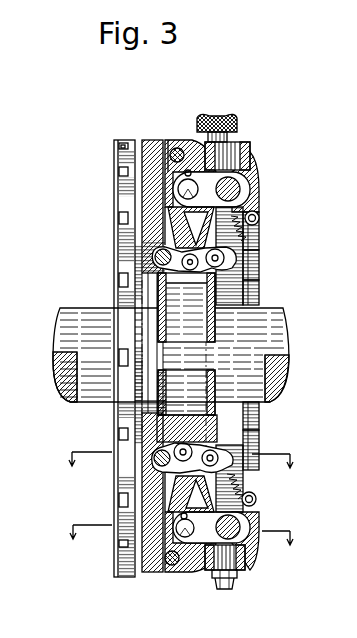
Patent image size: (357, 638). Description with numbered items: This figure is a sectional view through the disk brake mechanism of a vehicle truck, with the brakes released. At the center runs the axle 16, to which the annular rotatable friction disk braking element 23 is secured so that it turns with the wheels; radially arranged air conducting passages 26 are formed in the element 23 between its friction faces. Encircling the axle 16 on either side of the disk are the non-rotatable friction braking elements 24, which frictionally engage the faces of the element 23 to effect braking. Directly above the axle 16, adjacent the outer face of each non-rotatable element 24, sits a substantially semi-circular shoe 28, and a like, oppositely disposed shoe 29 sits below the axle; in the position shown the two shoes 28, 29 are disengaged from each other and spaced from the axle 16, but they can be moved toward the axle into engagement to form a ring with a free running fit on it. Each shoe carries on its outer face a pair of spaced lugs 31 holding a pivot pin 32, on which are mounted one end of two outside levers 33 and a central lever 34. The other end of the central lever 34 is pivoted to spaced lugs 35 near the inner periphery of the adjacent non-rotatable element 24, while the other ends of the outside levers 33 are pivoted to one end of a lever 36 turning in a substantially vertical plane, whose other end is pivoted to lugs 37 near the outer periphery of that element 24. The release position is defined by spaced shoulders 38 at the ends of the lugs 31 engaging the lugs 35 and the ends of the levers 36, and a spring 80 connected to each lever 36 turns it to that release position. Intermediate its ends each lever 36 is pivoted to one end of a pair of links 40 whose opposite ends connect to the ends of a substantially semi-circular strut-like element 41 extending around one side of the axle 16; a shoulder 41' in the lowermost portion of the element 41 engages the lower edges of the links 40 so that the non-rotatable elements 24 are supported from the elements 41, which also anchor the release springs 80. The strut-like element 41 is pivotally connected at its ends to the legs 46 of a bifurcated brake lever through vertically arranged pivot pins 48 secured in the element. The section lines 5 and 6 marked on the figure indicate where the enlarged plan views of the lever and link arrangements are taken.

The axle 16 is at (62, 378).
The rotatable friction disk braking element 23 is at (118, 140).
The non-rotatable friction braking element 24 is at (152, 140).
The air conducting passage 26 is at (120, 147).
The shoe 28 is at (187, 322).
The shoe 29 is at (257, 424).
The lug 31 is at (260, 240).
The pivot pin 32 is at (256, 292).
The outside lever 33 is at (250, 268).
The central lever 34 is at (181, 262).
The lug 35 is at (156, 249).
The lever 36 is at (259, 220).
The lug 37 is at (168, 143).
The shoulder 38 is at (150, 265).
The link 40 is at (252, 177).
The strut-like element 41 is at (265, 182).
The shoulder 41' is at (261, 547).
The leg 46 is at (250, 156).
The pivot pin 48 is at (236, 138).
The spring 80 is at (249, 229).
The section line 5— 5 is at (177, 460).
The section line 6— 6 is at (178, 534).